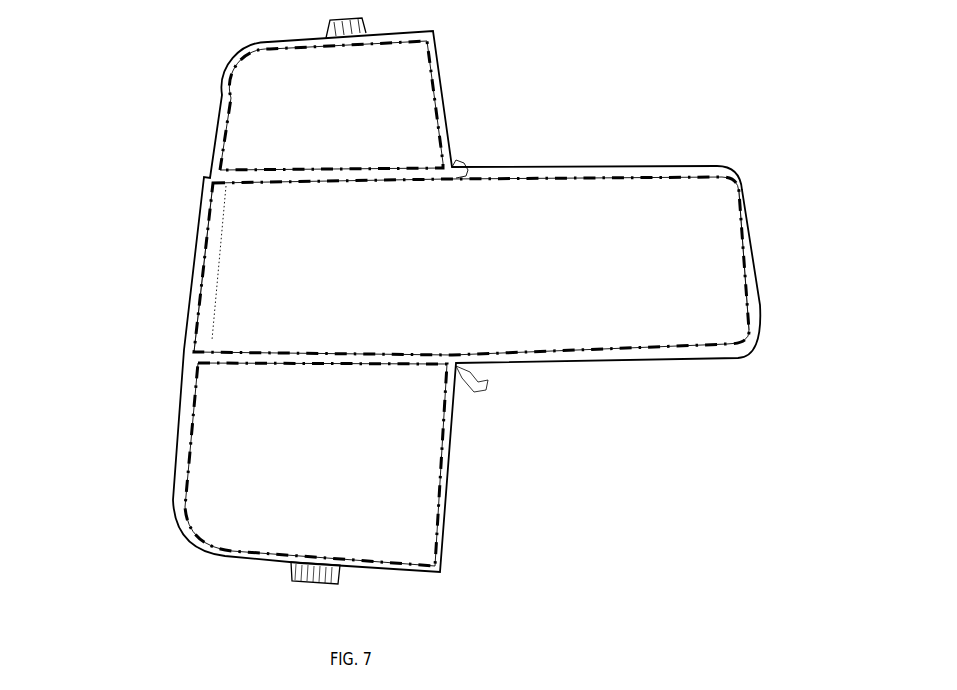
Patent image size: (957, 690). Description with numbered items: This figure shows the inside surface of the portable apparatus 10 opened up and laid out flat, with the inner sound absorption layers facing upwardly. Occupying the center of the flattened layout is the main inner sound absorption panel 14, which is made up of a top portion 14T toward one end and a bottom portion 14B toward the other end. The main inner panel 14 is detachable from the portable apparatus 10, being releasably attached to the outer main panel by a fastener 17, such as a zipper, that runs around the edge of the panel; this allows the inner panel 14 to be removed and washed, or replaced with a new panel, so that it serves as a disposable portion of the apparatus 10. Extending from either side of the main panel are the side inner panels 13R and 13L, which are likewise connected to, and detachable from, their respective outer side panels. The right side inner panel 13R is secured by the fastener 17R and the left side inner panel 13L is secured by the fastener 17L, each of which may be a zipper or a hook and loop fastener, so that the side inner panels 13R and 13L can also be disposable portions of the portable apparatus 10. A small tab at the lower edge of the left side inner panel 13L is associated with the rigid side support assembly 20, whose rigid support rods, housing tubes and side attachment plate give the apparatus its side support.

The portable apparatus 10 is at (603, 156).
The right side inner panel 13R is at (326, 118).
The right side fastener 17R is at (442, 83).
The main inner sound absorption panel 14 is at (370, 297).
The top portion 14T is at (258, 318).
The bottom portion 14B is at (605, 318).
The fastener 17 is at (580, 350).
The left side inner panel 13L is at (232, 458).
The left side fastener 17L is at (452, 427).
The rigid side support assembly 20 is at (292, 577).